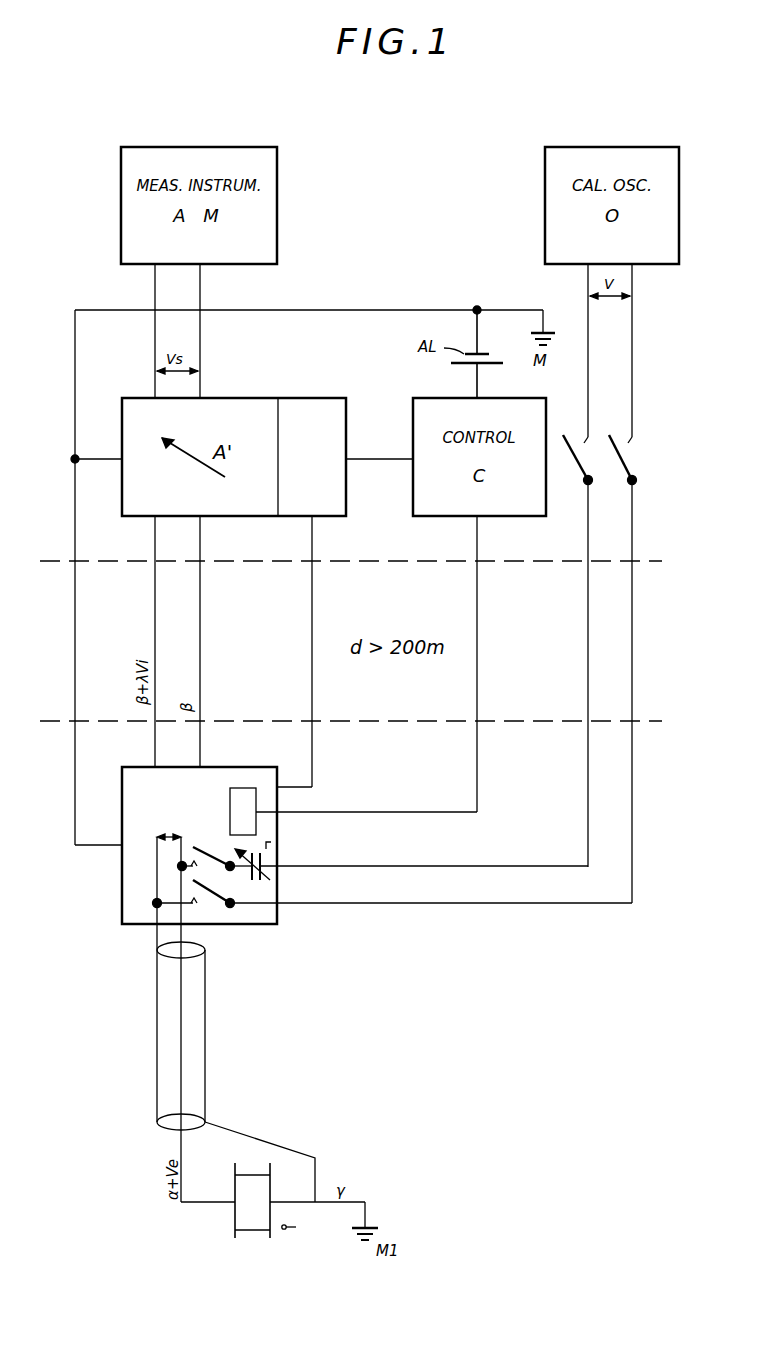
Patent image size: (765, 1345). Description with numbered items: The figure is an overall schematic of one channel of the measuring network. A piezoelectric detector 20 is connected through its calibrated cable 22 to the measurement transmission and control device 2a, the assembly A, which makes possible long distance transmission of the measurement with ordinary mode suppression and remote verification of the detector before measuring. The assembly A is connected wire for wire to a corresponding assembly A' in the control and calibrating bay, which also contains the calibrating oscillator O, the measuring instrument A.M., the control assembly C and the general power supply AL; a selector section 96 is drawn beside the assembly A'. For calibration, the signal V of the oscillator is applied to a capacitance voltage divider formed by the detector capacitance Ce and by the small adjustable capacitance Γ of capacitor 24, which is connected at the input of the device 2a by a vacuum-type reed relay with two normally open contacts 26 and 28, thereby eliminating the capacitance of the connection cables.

The piezoelectric detector 20 is at (257, 1233).
The calibrated cable 22 is at (206, 1033).
The capacitor 24 is at (263, 862).
The N/O contact 26 is at (214, 853).
The N/O contact 28 is at (214, 900).
The measurement transmission and control device 2a is at (122, 876).
The sensor selector unit su-sn 96 is at (302, 457).